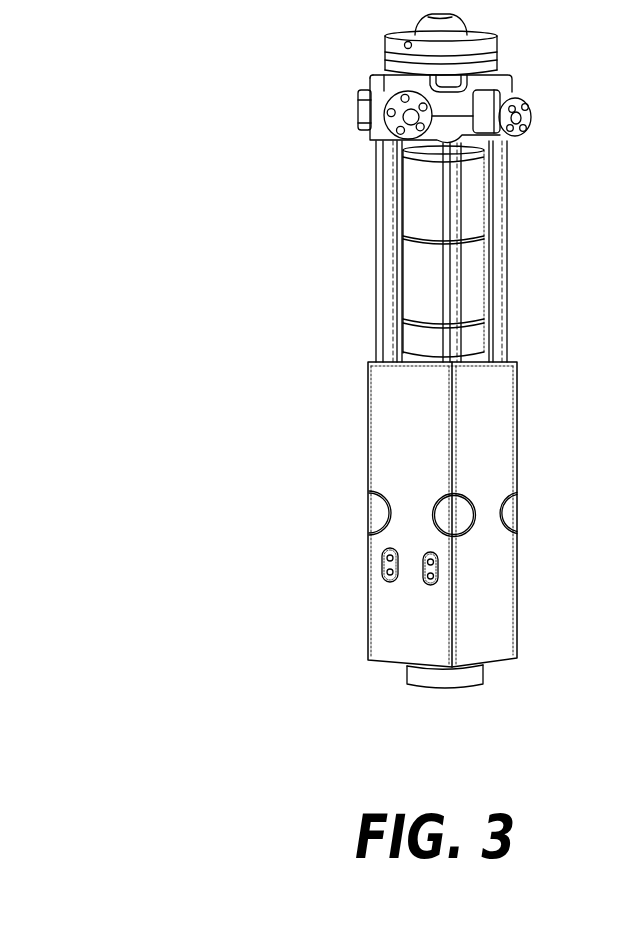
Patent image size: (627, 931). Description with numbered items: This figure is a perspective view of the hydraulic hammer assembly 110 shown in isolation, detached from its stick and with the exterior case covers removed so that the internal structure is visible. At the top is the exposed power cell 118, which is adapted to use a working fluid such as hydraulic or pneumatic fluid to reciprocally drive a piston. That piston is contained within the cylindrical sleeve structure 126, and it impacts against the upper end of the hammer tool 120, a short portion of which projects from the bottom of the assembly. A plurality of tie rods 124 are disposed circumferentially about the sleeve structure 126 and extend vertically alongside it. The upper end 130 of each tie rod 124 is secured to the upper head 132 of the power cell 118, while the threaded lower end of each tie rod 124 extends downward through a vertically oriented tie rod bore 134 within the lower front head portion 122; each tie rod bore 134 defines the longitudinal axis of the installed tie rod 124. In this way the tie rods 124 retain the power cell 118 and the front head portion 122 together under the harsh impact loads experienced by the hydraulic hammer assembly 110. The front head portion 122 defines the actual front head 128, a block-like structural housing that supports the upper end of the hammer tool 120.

The hydraulic hammer assembly 110 is at (532, 336).
The power cell 118 is at (333, 222).
The hammer tool 120 is at (480, 676).
The front head portion 122 is at (347, 652).
The tie rods 124 is at (380, 330).
The sleeve structure 126 is at (420, 281).
The front head 128 is at (420, 418).
The upper end 130 is at (378, 155).
The upper head 132 is at (358, 102).
The tie rod bore 134 is at (463, 497).